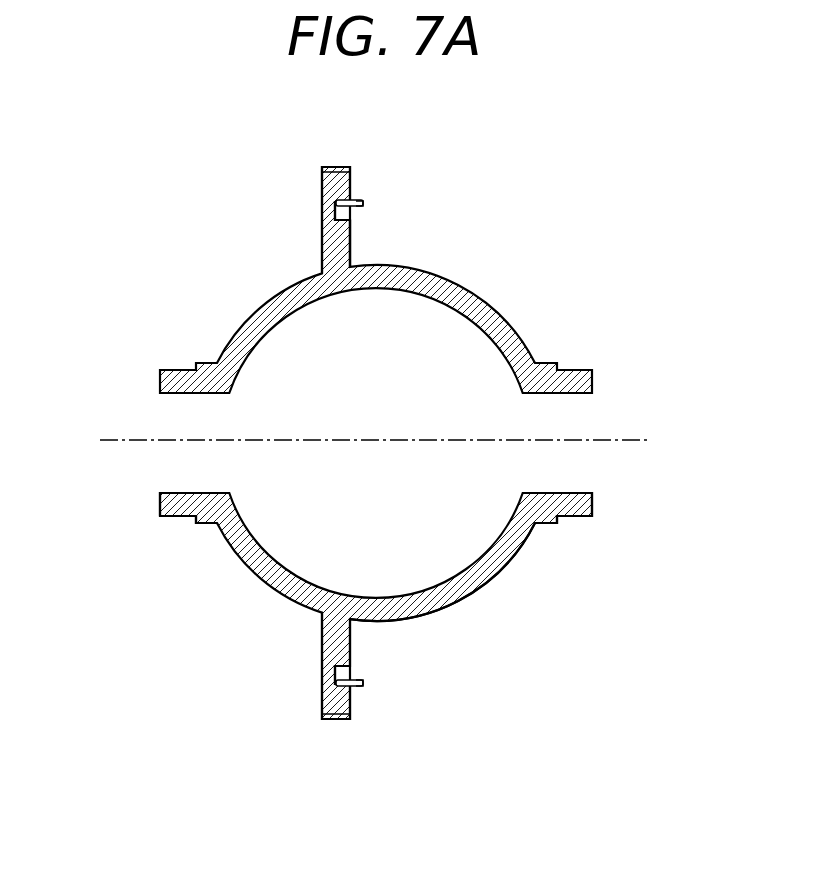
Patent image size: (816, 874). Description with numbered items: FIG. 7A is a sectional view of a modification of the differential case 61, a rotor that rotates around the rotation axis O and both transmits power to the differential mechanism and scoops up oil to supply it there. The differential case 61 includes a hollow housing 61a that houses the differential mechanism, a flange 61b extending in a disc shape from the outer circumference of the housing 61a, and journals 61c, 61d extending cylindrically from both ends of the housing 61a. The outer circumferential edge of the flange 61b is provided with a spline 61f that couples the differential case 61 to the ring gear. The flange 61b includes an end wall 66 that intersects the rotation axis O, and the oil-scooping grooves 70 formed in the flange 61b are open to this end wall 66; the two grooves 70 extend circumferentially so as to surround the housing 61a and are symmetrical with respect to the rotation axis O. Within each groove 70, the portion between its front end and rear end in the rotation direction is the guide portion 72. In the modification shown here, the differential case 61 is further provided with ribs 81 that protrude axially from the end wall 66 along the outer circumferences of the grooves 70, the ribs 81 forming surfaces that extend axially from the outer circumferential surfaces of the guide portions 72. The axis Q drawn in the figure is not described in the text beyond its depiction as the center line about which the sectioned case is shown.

The differential case 61 is at (250, 306).
The housing 61a is at (484, 585).
The flange 61b is at (321, 227).
The journal 61c is at (176, 518).
The journal 61d is at (573, 518).
The spline 61f is at (335, 720).
The end wall 66 is at (351, 243).
The groove 70 is at (338, 217).
The guide portion 72 is at (340, 206).
The rib 81 is at (359, 201).
The axis Q is at (118, 438).